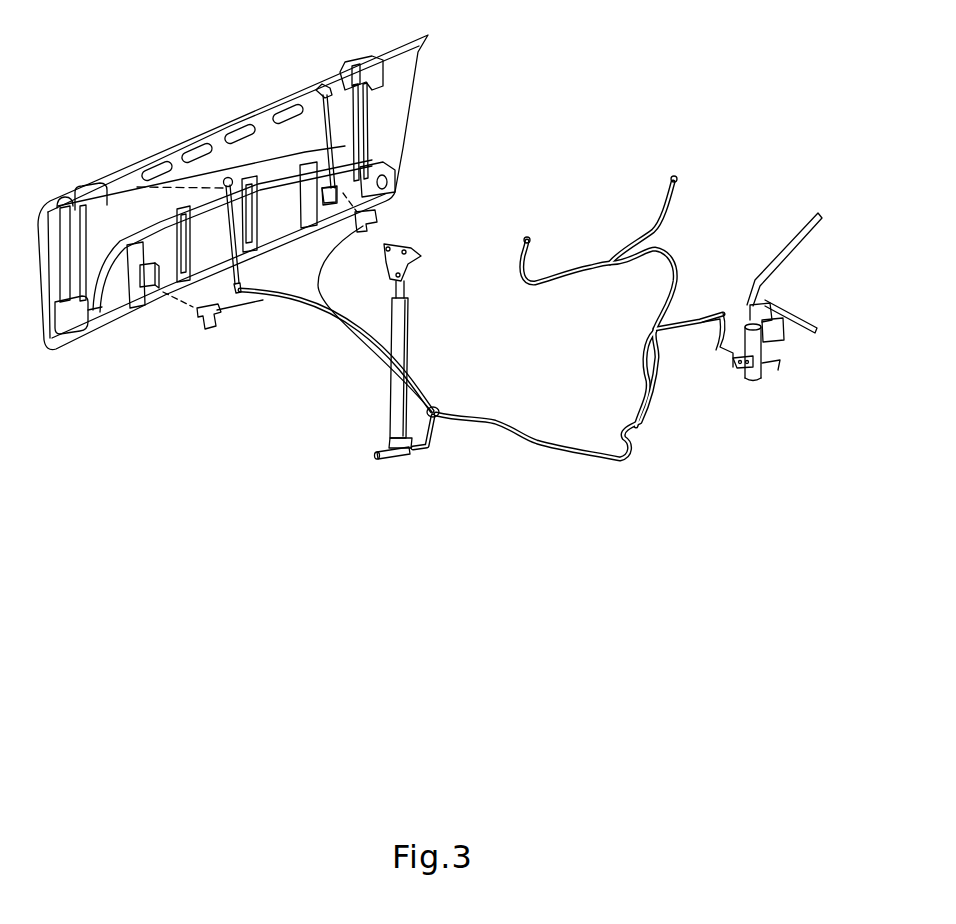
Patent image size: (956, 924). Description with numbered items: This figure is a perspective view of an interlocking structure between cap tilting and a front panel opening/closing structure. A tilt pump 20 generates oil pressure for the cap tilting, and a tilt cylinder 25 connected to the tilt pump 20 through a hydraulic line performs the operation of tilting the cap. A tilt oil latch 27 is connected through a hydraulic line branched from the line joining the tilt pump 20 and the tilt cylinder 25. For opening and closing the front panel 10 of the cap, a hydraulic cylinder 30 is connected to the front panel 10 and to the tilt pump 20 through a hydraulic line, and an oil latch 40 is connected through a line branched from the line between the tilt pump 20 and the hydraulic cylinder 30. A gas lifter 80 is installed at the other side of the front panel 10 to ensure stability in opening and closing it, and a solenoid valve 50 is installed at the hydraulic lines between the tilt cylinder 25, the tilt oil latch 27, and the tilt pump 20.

The front panel 10 is at (235, 112).
The hydraulic cylinder 30 is at (222, 238).
The gas lifter 80 is at (332, 136).
The oil latch 40 is at (204, 332).
The tilt oil latch 27 is at (527, 237).
The solenoid valve 50 is at (437, 406).
The tilt cylinder 25 is at (388, 390).
The tilt pump 20 is at (745, 378).